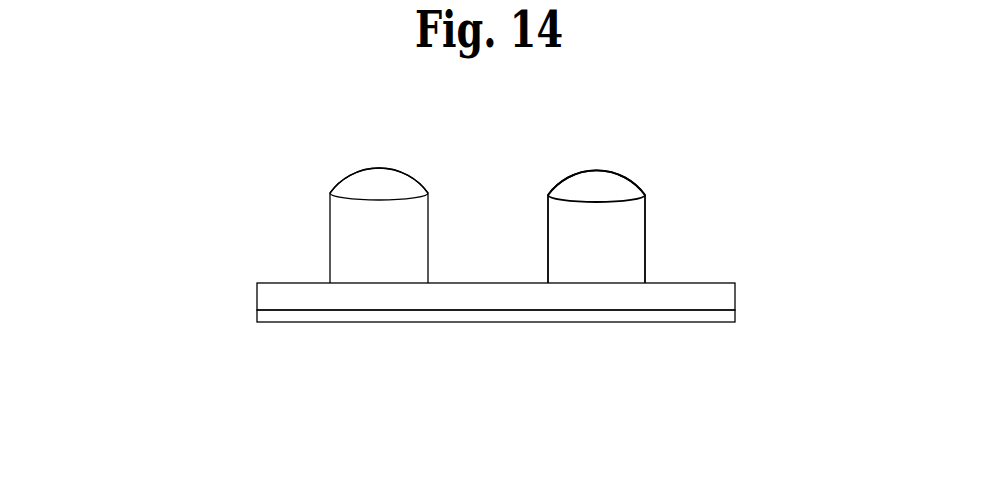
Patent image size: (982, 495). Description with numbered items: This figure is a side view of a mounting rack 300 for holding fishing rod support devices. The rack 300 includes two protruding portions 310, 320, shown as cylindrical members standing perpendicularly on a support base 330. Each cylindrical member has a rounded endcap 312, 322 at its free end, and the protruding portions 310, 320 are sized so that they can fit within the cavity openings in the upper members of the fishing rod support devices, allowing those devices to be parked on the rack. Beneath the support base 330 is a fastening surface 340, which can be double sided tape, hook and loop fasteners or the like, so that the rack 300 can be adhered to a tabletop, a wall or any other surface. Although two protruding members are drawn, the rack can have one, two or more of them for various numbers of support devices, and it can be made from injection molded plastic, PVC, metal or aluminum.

The mounting rack 300 is at (140, 66).
The protruding portion 310 is at (313, 225).
The rounded endcap 312 is at (418, 160).
The protruding portion 320 is at (663, 226).
The rounded endcap 322 is at (645, 161).
The support base 330 is at (427, 281).
The fastening surface 340 is at (442, 367).